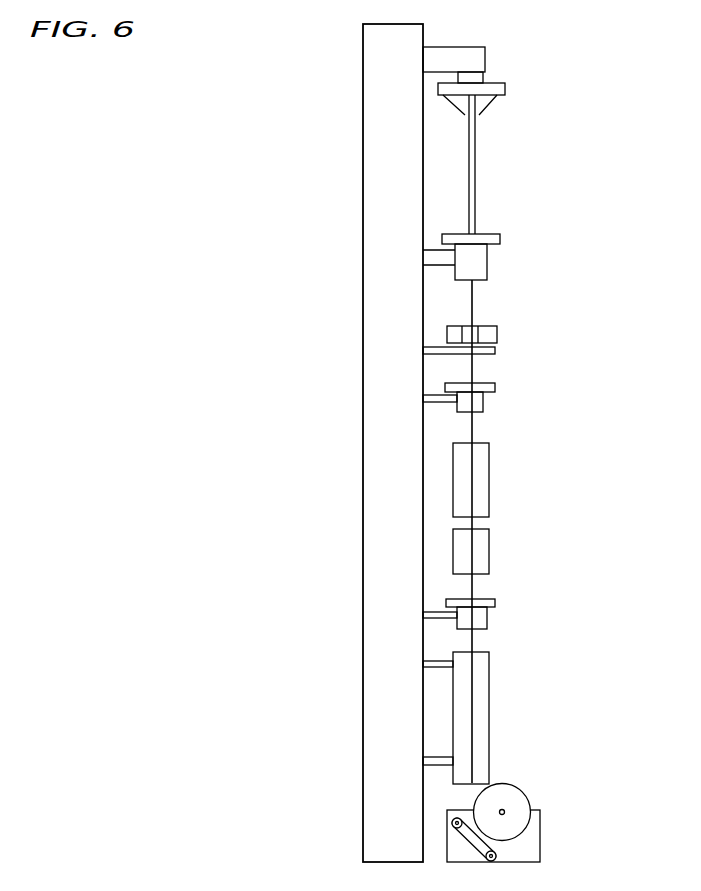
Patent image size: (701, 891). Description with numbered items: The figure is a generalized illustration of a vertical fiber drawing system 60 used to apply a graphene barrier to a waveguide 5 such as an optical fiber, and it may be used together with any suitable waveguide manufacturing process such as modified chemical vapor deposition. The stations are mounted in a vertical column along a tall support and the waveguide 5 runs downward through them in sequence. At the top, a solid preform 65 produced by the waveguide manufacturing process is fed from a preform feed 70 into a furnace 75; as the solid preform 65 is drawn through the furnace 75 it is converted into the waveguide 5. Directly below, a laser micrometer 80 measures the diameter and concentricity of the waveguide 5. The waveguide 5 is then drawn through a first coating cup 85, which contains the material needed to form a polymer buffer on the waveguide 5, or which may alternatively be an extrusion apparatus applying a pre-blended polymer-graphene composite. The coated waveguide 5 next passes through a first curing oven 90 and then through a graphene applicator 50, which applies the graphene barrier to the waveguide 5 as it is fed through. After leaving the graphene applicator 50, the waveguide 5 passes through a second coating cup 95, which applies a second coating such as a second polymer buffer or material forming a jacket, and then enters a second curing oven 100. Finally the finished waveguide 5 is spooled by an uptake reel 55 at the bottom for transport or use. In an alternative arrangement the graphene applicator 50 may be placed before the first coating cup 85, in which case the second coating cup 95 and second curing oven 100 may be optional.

The vertical fiber drawing system 60 is at (362, 84).
The preform feed 70 is at (505, 90).
The solid preform 65 is at (477, 155).
The furnace 75 is at (487, 253).
The waveguide 5 is at (476, 305).
The laser micrometer 80 is at (497, 333).
The first coating cup 85 is at (485, 400).
The first curing oven 90 is at (489, 500).
The graphene applicator 50 is at (489, 541).
The second coating cup 95 is at (487, 614).
The second curing oven 100 is at (489, 697).
The uptake reel 55 is at (540, 827).